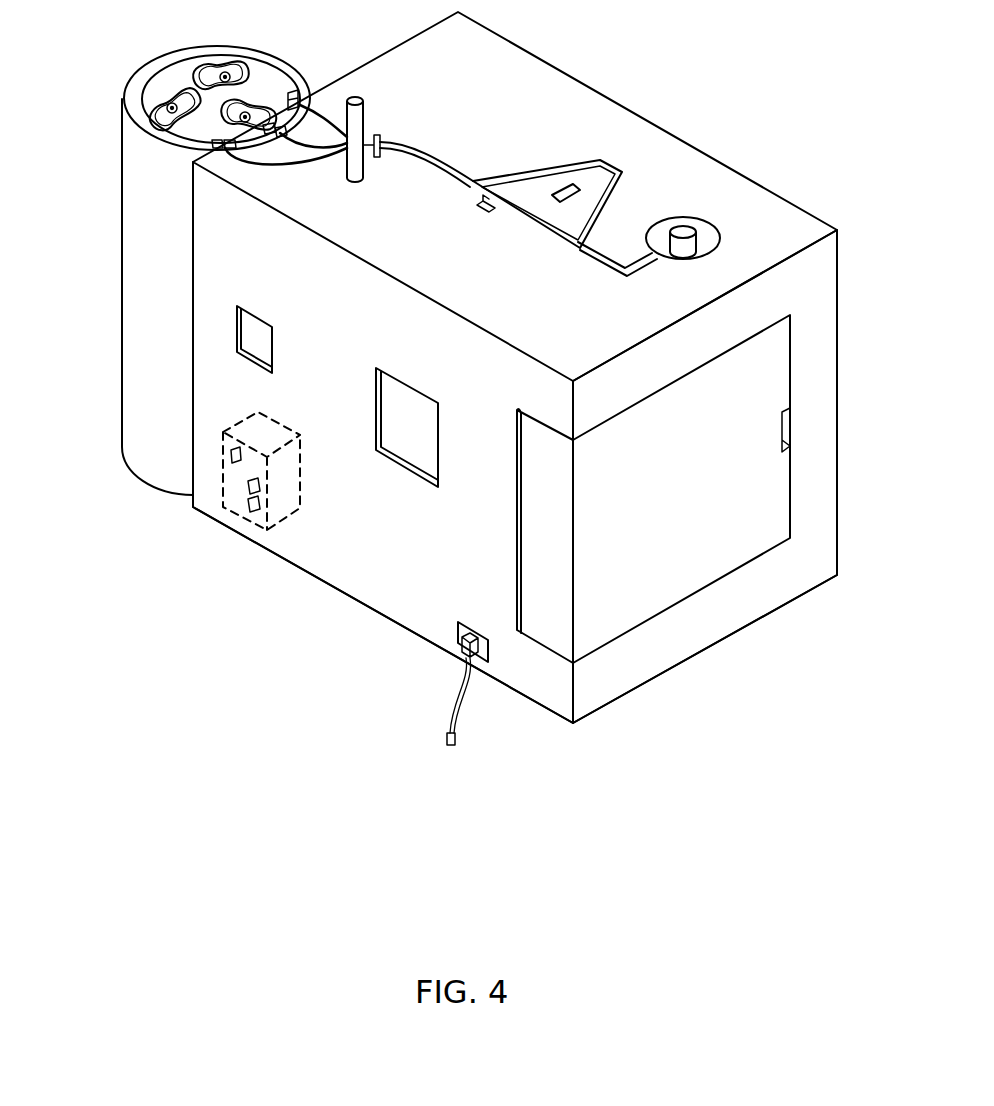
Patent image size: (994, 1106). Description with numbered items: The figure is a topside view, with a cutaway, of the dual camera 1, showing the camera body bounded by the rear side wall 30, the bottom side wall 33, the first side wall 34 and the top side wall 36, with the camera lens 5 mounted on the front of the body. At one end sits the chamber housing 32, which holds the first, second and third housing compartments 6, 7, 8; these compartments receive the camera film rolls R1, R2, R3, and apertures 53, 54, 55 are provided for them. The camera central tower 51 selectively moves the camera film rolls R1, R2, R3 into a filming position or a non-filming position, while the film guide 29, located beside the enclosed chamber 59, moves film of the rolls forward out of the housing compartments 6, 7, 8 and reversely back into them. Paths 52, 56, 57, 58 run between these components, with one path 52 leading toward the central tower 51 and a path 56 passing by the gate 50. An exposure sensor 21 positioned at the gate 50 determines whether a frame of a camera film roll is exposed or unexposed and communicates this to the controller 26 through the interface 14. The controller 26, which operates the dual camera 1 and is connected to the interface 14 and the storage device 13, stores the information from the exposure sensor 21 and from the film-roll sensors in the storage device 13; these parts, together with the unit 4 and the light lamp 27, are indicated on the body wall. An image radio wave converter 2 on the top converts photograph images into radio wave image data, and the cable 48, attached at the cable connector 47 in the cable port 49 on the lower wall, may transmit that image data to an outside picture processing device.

The dual camera 1 is at (802, 53).
The image radio wave converter 2 is at (565, 190).
The unit 4 is at (225, 484).
The camera lens 5 is at (405, 393).
The first housing compartment 6 is at (203, 63).
The second housing compartment 7 is at (263, 102).
The third housing compartment 8 is at (157, 112).
The camera film roll R1 is at (220, 67).
The camera film roll R2 is at (253, 107).
The camera film roll R3 is at (160, 103).
The storage device 13 is at (237, 462).
The interface 14 is at (258, 505).
The exposure sensor 21 is at (485, 212).
The controller 26 is at (260, 490).
The light lamp 27 is at (255, 322).
The film guide 29 is at (377, 133).
The rear side wall 30 is at (392, 608).
The chamber housing 32 is at (130, 345).
The bottom side wall 33 is at (612, 108).
The first side wall 34 is at (614, 688).
The top side wall 36 is at (540, 707).
The cable connector 47 is at (478, 648).
The cable 48 is at (447, 715).
The cable port 49 is at (457, 630).
The gate 50 is at (530, 222).
The central tower 51 is at (683, 232).
The path 52 is at (637, 268).
The aperture 53 is at (295, 95).
The aperture 54 is at (277, 133).
The aperture 55 is at (223, 150).
The path 56 is at (327, 117).
The path 57 is at (307, 142).
The path 58 is at (240, 163).
The enclosed chamber 59 is at (355, 93).